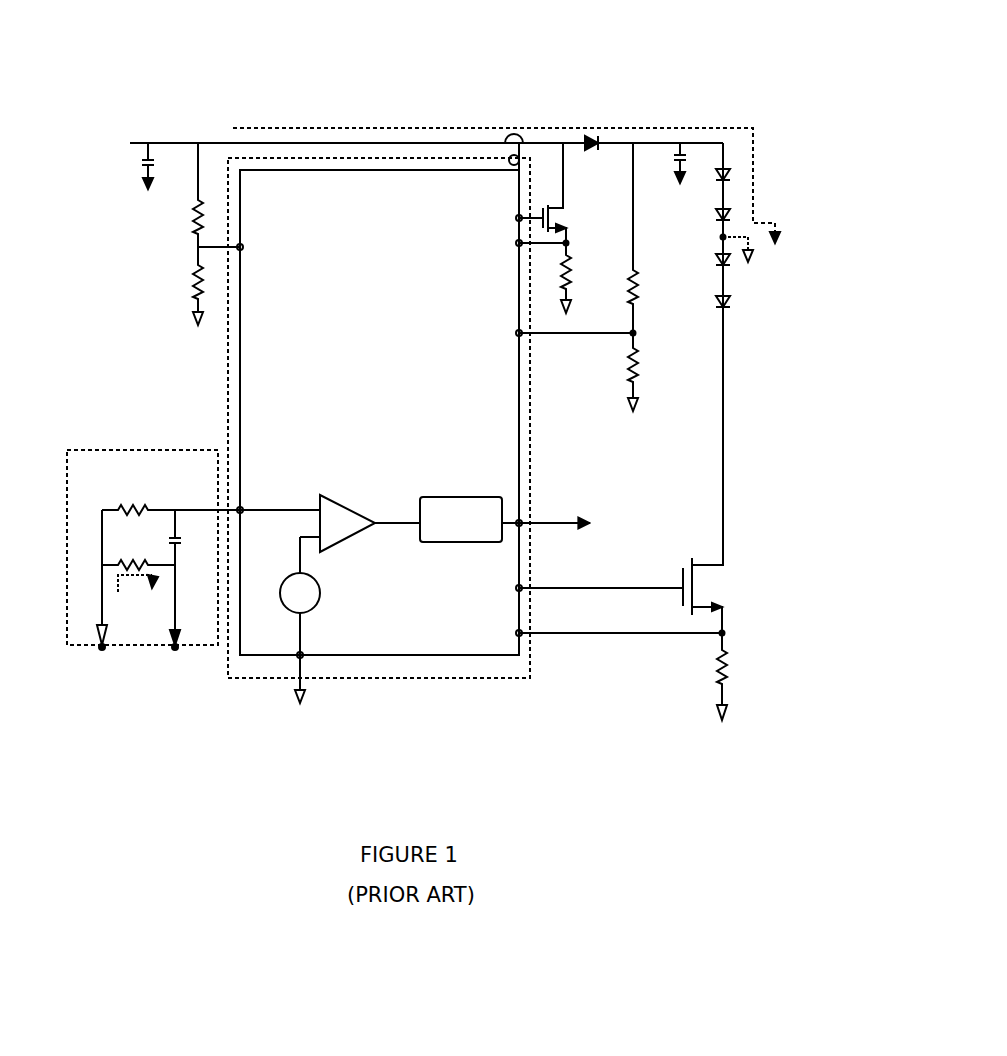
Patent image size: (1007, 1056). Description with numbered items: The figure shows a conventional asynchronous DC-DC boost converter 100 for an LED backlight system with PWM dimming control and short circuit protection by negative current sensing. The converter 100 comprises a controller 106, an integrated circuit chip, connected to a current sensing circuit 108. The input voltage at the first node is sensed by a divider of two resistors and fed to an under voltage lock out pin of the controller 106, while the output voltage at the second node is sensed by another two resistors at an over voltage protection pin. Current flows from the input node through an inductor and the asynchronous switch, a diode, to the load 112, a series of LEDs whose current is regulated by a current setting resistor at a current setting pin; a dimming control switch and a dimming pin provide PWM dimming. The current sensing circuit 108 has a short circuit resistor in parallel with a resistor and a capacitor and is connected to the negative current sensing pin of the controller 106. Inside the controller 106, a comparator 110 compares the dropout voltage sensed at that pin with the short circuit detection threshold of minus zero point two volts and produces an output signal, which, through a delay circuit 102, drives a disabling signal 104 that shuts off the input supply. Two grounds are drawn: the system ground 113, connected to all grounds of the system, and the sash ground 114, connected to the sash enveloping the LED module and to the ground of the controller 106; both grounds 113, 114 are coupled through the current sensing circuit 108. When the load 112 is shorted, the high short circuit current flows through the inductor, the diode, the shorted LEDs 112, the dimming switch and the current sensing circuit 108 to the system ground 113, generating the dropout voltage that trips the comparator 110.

The asynchronous DC-DC boost converter 100 is at (440, 55).
The delay circuit 102 is at (447, 519).
The disabling signal 104 is at (583, 523).
The controller 106 is at (534, 444).
The current sensing circuit 108 is at (138, 432).
The comparator 110 is at (334, 490).
The load 112 is at (778, 160).
The system ground 113 is at (168, 652).
The sash ground 114 is at (96, 652).